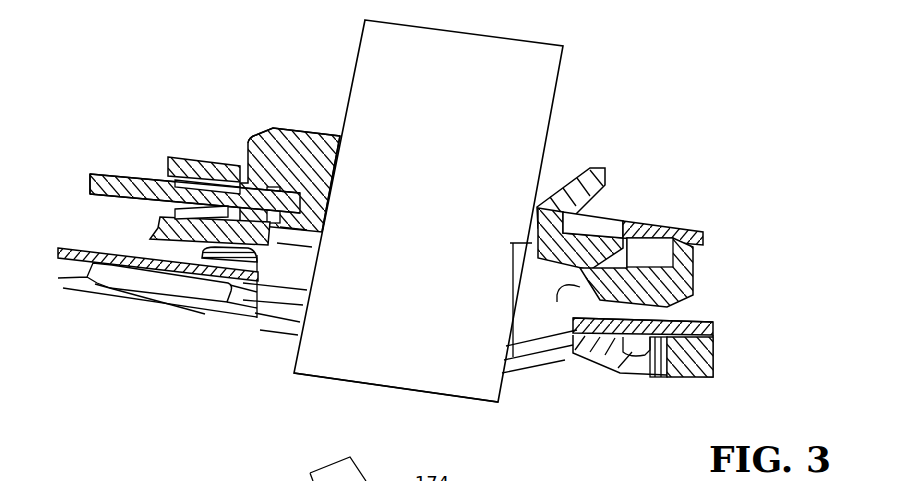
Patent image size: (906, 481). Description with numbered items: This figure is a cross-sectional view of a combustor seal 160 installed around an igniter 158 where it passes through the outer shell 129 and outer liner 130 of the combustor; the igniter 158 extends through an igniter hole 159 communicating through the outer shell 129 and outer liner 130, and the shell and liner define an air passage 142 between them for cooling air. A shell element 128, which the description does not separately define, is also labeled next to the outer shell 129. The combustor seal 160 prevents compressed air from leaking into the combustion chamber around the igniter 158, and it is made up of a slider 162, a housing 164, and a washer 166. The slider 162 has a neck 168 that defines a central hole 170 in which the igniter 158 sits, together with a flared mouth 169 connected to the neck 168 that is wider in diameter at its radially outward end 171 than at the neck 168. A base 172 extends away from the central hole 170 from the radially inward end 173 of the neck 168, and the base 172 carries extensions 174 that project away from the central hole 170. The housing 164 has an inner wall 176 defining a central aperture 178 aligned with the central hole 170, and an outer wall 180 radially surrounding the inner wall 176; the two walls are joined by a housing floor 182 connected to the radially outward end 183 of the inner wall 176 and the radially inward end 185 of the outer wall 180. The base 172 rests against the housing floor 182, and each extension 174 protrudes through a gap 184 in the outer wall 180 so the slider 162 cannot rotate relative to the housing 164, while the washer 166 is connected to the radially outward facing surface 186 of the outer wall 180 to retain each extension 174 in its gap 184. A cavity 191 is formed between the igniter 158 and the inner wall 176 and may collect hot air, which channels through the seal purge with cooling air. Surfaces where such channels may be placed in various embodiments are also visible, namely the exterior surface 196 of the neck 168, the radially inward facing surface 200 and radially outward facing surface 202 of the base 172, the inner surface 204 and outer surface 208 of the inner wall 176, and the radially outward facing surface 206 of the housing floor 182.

The bearing ring 128 is at (685, 316).
The outer shell 129 is at (675, 328).
The outer liner 130 is at (705, 378).
The air passage 142 is at (158, 282).
The igniter 158 is at (430, 220).
The igniter hole 159 is at (405, 421).
The combustor seal 160 is at (575, 125).
The slider 162 is at (297, 173).
The housing 164 is at (257, 278).
The washer 166 is at (680, 228).
The neck 168 is at (585, 215).
The flared mouth 169 is at (580, 190).
The central hole 170 is at (532, 243).
The radially outward end 171 is at (273, 128).
The base 172 is at (620, 238).
The radially inward end 173 is at (326, 178).
The extension 174 is at (105, 174).
The inner wall 176 is at (612, 345).
The central aperture 178 is at (305, 268).
The outer wall 180 is at (677, 263).
The housing floor 182 is at (677, 377).
The radially outward end 183 is at (568, 355).
The gap 184 is at (146, 165).
The radially inward end 185 is at (675, 288).
The radially outward facing surface 186 is at (188, 157).
The cavity 191 is at (543, 316).
The exterior surface 196 is at (247, 165).
The radially inward facing surface 200 is at (122, 207).
The radially outward facing surface 202 is at (133, 176).
The inner surface 204 is at (272, 255).
The radially outward facing surface 206 is at (242, 216).
The outer surface 208 is at (195, 246).